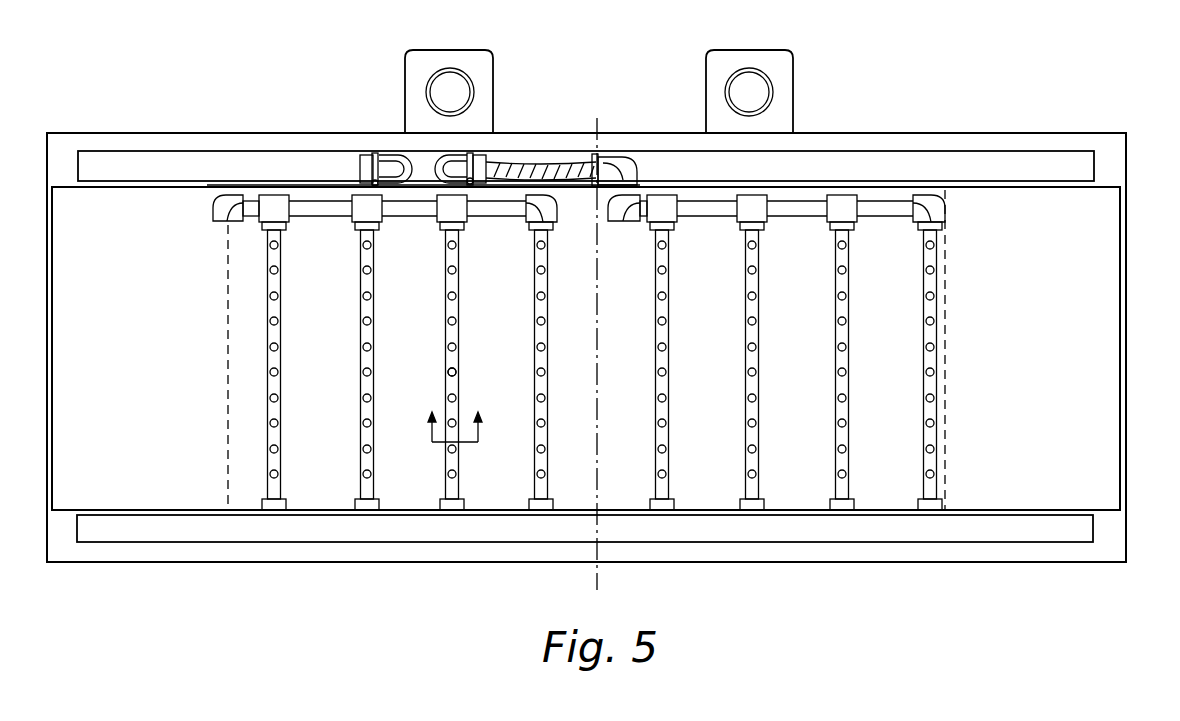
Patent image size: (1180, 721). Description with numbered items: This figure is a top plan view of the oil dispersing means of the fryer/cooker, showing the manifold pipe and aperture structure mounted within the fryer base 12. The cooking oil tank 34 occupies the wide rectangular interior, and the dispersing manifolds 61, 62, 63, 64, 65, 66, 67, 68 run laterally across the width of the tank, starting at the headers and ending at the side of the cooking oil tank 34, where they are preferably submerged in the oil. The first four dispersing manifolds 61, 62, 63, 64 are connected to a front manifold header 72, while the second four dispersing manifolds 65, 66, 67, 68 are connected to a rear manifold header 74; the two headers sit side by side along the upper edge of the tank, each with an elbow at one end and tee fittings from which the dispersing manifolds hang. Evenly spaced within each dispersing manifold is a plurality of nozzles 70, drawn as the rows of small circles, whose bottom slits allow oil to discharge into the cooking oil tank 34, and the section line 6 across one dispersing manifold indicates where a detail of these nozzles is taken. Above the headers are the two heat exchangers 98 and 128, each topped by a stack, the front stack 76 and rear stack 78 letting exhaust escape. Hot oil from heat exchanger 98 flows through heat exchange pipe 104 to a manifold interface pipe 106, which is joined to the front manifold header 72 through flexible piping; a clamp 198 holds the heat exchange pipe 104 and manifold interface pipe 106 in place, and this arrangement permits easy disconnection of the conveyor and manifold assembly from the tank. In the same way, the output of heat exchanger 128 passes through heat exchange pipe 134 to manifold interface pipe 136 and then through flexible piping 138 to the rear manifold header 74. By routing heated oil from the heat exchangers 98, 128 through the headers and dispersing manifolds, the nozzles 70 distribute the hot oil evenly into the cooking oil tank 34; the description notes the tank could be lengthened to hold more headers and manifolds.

The fryer base 12 is at (1012, 133).
The cooking oil tank 34 is at (1104, 365).
The heat exchanger 98 is at (455, 50).
The heat exchanger 128 is at (745, 50).
The front stack 76 is at (476, 96).
The rear stack 78 is at (600, 281).
The flexible piping 138 is at (575, 168).
The manifold interface pipe 106 is at (364, 160).
The clamp 198 is at (374, 160).
The heat exchange pipe 104 is at (393, 166).
The heat exchange pipe 134 is at (452, 167).
The manifold interface pipe 136 is at (472, 170).
The front manifold header 72 is at (400, 216).
The rear manifold header 74 is at (785, 216).
The dispersing manifold 61 is at (281, 386).
The dispersing manifold 62 is at (374, 380).
The dispersing manifold 63 is at (460, 242).
The dispersing manifold 64 is at (549, 241).
The dispersing manifold 65 is at (668, 276).
The dispersing manifold 66 is at (757, 378).
The dispersing manifold 67 is at (847, 378).
The dispersing manifold 68 is at (940, 362).
The nozzles 70 is at (456, 373).
The section line 6- 6 is at (453, 442).